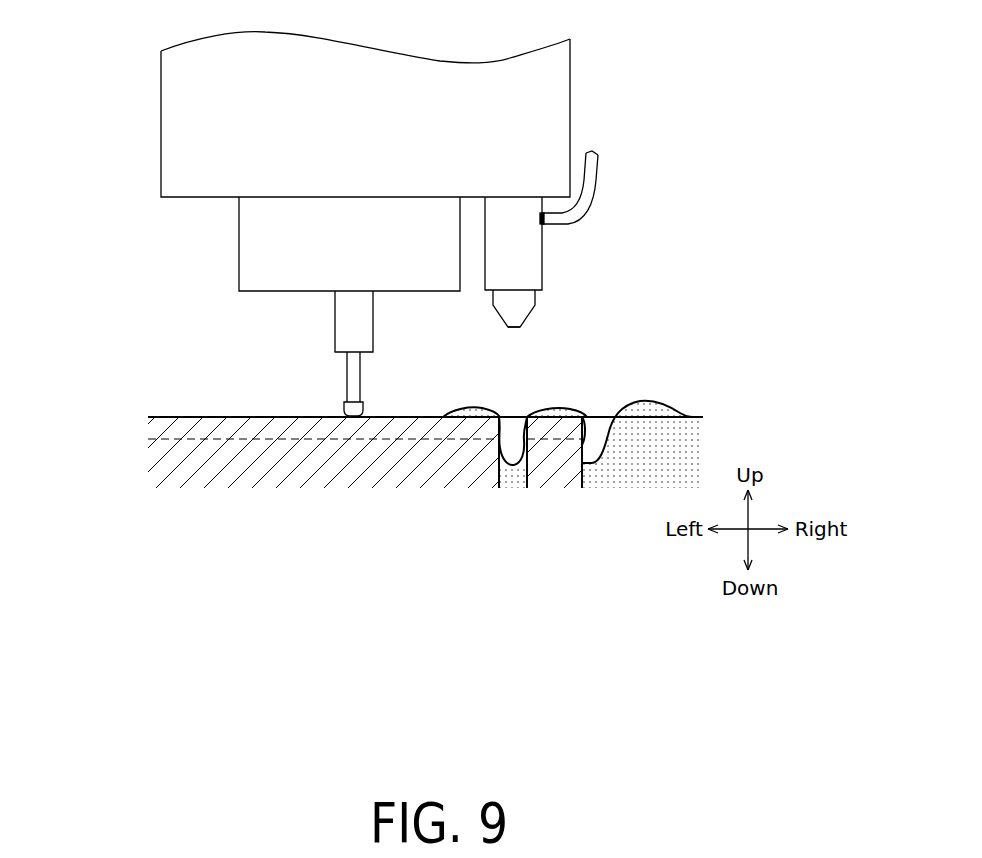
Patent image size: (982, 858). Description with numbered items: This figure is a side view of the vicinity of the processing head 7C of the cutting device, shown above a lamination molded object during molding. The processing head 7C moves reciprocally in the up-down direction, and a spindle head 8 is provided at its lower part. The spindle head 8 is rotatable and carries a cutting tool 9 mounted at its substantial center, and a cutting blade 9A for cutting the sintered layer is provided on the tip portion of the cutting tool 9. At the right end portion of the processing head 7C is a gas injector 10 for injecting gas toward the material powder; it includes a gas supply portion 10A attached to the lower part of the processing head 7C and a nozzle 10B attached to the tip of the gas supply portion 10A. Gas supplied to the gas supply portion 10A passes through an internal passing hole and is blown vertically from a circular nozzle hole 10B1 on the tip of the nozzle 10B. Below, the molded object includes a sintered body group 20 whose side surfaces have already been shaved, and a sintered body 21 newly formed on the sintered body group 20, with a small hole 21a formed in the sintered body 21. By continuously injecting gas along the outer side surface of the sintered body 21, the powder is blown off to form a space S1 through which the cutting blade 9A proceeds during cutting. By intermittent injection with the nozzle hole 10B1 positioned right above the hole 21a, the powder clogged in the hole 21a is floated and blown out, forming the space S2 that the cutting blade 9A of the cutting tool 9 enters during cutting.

The processing head 7C is at (557, 100).
The spindle head 8 is at (250, 243).
The cutting tool 9 is at (355, 370).
The cutting blade 9A is at (352, 405).
The gas injector 10 is at (542, 251).
The gas supply portion 10A is at (530, 268).
The nozzle 10B is at (517, 317).
The nozzle hole 10B1 is at (509, 331).
The sintered body group 20 is at (165, 464).
The sintered body 21 is at (165, 425).
The small hole 21a is at (505, 425).
The space S1 is at (608, 405).
The space S2 is at (515, 410).